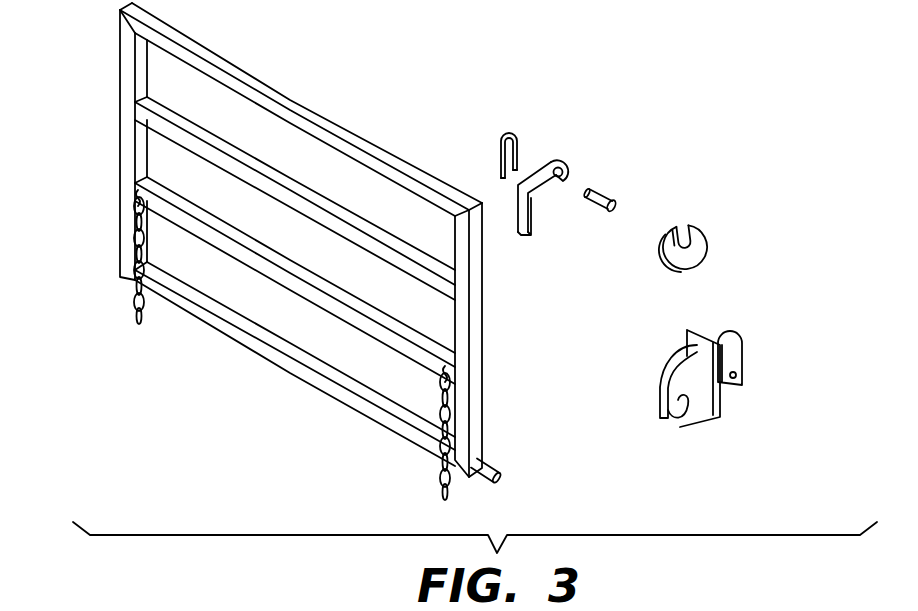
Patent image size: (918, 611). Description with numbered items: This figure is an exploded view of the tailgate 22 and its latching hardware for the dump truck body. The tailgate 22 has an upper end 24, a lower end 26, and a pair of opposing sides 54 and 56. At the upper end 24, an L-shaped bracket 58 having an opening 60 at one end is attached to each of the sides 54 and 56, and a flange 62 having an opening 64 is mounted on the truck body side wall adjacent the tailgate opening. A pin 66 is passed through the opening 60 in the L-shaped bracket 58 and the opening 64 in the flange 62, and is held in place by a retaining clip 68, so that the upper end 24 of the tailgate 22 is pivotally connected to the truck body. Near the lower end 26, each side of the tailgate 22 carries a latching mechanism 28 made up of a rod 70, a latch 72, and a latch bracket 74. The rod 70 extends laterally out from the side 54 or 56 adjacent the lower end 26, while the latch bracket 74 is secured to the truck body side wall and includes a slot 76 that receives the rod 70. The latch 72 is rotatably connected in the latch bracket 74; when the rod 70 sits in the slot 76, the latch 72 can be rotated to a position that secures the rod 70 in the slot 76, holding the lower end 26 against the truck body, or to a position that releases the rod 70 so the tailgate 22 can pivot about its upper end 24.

The tailgate 22 is at (165, 246).
The upper end 24 is at (302, 104).
The lower end 26 is at (270, 357).
The latching mechanism 28 is at (746, 384).
The side 54 is at (477, 342).
The side 56 is at (125, 135).
The L-shaped bracket 58 is at (530, 223).
The opening 60 is at (557, 160).
The flange 62 is at (702, 245).
The opening 64 is at (683, 227).
The pin 66 is at (600, 188).
The retaining clip 68 is at (513, 138).
The rod 70 is at (489, 471).
The latch 72 is at (735, 348).
The latch bracket 74 is at (697, 342).
The slot 76 is at (658, 403).